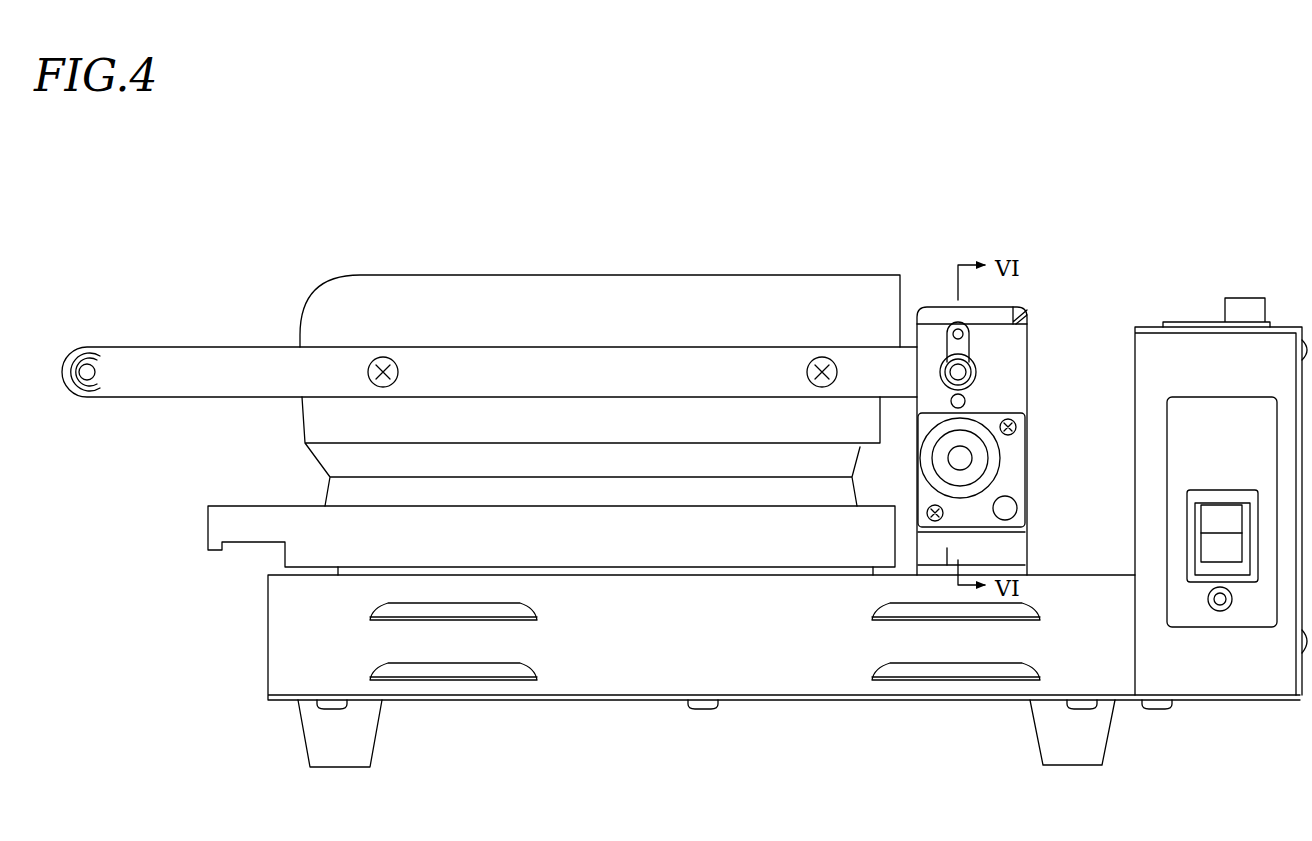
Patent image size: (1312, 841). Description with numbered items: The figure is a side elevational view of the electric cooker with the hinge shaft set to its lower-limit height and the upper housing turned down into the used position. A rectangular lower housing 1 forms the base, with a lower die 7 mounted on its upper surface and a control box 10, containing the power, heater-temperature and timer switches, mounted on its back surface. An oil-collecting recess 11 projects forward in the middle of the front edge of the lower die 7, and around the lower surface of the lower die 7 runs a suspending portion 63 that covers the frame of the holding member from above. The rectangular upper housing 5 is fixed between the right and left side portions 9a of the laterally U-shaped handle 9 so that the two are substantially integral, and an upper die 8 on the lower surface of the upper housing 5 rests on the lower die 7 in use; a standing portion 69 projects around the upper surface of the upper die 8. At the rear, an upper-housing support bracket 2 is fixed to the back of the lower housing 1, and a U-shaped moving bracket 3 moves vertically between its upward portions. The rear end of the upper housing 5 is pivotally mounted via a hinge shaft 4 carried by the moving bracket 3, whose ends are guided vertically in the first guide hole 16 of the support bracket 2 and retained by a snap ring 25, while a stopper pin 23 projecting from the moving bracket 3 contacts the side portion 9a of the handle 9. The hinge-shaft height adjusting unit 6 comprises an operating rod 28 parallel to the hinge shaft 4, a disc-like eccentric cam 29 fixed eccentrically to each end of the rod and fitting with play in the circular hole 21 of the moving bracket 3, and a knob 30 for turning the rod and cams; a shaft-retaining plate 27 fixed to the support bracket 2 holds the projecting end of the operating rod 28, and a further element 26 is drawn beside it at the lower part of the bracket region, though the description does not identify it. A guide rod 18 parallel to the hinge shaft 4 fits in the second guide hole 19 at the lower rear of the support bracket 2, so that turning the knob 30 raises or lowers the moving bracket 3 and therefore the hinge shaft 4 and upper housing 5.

The lower housing 1 is at (578, 701).
The upper-housing support bracket 2 is at (930, 301).
The moving bracket 3 is at (1016, 318).
The hinge shaft 4 is at (962, 370).
The upper housing 5 is at (523, 275).
The hinge-shaft height adjusting unit 6 is at (1005, 457).
The lower die 7 is at (662, 578).
The upper die 8 is at (793, 481).
The handle 9 is at (241, 344).
The side portion of the handle 9a is at (468, 346).
The control box 10 is at (1283, 345).
The oil-collecting recess 11 is at (208, 526).
The first guide hole 16 is at (957, 328).
The guide rod 18 is at (1020, 502).
The second guide hole 19 is at (1018, 480).
The circular hole 21 is at (947, 565).
The stopper pin 23 is at (968, 396).
The snap ring 25 is at (940, 368).
The link 26 is at (920, 528).
The shaft-retaining plate 27 is at (915, 507).
The operating rod 28 is at (965, 460).
The eccentric cam 29 is at (1000, 533).
The knob 30 is at (998, 432).
The suspending portion 63 is at (300, 553).
The standing portion 69 is at (302, 413).